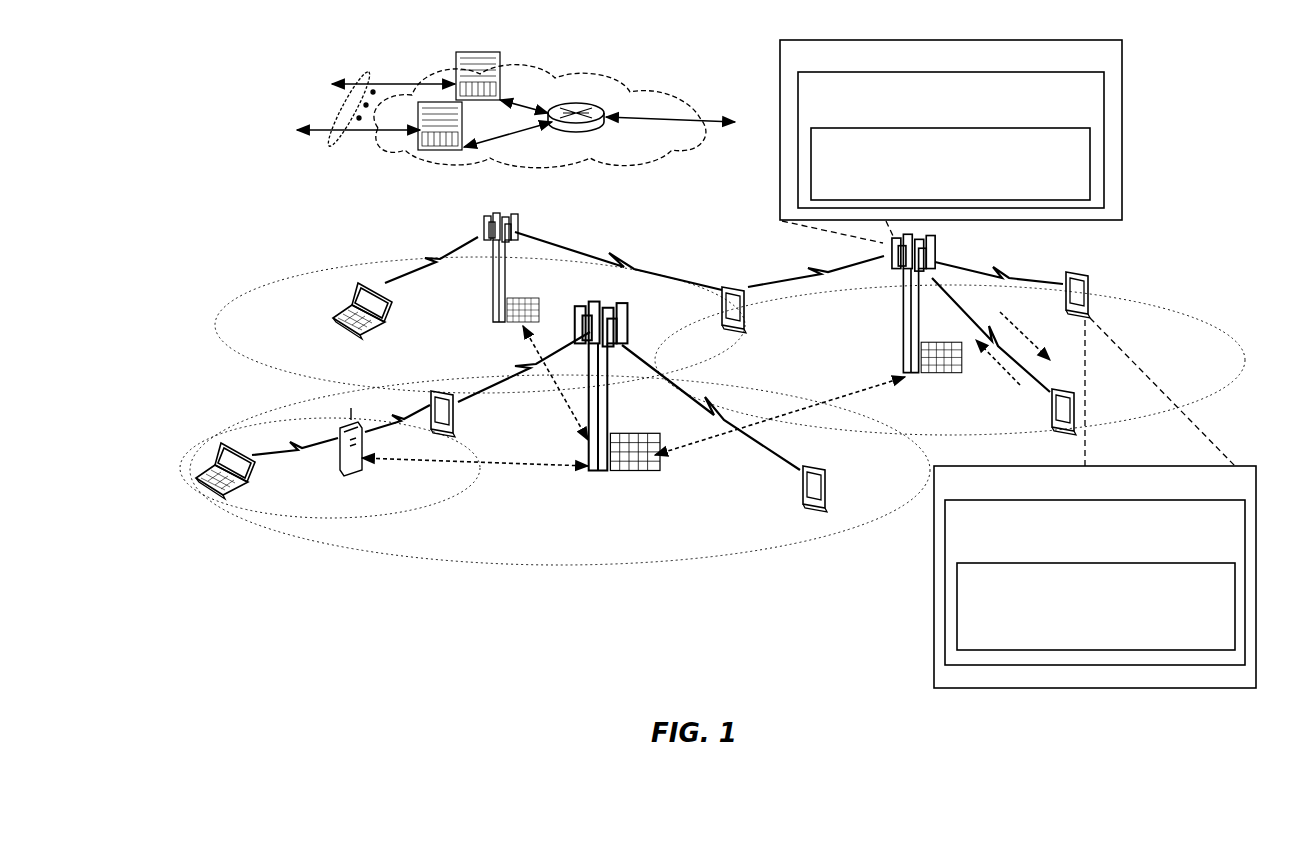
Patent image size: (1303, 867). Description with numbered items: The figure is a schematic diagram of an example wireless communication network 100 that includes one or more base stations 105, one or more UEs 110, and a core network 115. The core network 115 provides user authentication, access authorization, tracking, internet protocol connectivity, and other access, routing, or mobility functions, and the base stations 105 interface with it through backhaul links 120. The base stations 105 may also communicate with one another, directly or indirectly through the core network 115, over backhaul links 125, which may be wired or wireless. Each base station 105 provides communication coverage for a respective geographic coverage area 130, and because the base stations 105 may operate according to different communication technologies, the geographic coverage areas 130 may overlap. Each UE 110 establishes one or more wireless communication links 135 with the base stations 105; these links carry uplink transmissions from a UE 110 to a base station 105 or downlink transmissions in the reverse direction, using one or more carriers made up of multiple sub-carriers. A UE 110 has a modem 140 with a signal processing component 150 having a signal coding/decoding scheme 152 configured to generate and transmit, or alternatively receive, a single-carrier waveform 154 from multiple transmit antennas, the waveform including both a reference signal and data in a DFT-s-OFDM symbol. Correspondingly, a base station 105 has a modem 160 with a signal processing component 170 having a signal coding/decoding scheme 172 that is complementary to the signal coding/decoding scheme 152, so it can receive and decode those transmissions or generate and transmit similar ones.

The wireless communication network 100 is at (226, 86).
The base station 105 is at (495, 308).
The user equipment (UE) 110 is at (366, 334).
The core network 115 is at (605, 163).
The backhaul link 120 is at (341, 140).
The backhaul link 125 is at (440, 462).
The geographic coverage area 130 is at (262, 367).
The wireless communication link 135 is at (428, 254).
The modem 140 is at (1095, 503).
The signal processing component 150 is at (1095, 582).
The signal coding/decoding scheme 152 is at (1096, 606).
The single-carrier waveform 154 is at (1030, 354).
The modem 160 is at (951, 141).
The signal processing component 170 is at (951, 140).
The signal coding/decoding scheme 172 is at (950, 164).